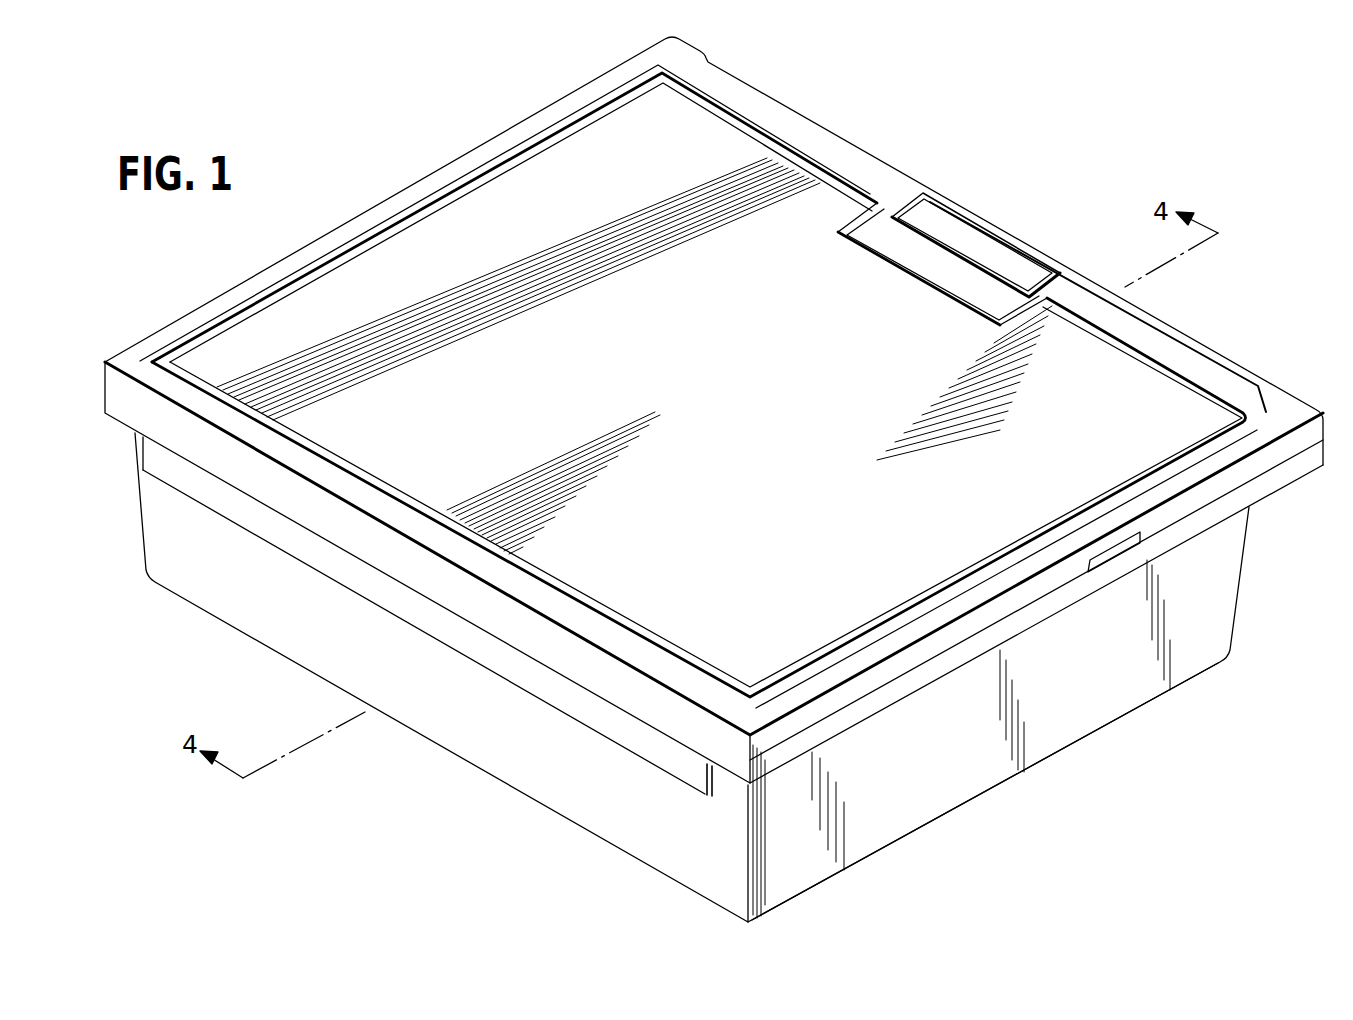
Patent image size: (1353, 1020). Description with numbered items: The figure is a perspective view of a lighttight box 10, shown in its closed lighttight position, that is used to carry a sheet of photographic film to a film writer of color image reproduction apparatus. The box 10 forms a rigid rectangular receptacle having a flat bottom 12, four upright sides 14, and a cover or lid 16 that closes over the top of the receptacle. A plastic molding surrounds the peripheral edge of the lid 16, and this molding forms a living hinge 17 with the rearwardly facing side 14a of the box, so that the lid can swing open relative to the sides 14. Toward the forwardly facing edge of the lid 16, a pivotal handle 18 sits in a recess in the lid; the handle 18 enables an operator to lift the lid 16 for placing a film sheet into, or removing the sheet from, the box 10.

The lighttight box 10 is at (1220, 314).
The flat bottom 12 is at (990, 793).
The upright sides 14 is at (1038, 743).
The rearwardly facing side 14a is at (453, 723).
The cover or lid 16 is at (442, 258).
The living hinge 17 is at (737, 760).
The pivotal handle 18 is at (973, 252).